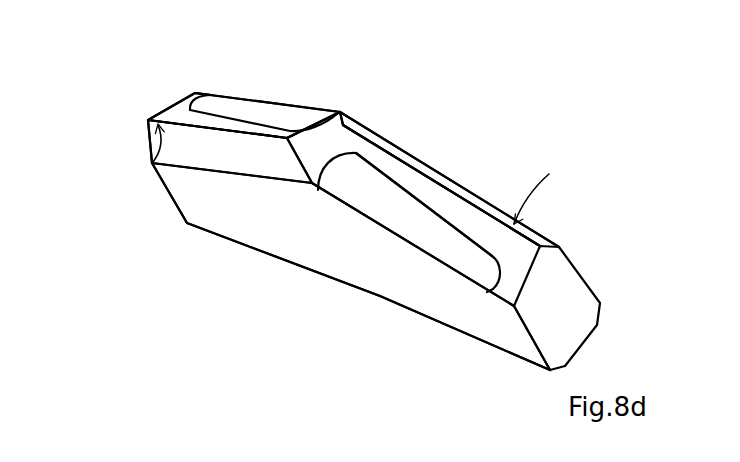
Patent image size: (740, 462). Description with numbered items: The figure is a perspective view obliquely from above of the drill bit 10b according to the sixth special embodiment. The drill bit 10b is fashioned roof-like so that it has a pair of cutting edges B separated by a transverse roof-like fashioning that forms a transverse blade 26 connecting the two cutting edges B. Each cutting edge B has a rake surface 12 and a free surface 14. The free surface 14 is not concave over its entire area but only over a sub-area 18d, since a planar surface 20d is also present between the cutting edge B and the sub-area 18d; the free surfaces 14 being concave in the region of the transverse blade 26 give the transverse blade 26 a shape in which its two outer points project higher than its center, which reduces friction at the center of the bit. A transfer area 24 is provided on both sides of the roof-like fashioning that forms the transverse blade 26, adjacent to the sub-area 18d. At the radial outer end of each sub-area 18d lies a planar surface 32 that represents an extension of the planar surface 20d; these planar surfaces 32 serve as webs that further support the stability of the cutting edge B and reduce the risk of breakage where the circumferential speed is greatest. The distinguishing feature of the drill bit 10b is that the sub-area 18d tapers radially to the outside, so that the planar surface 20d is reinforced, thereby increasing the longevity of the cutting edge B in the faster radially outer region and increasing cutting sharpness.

The drill bit 10b is at (590, 256).
The rake surface 12 is at (213, 153).
The free surface 14 is at (418, 225).
The sub-area 18d is at (289, 118).
The planar surface 20d is at (237, 124).
The transfer area 24 is at (338, 174).
The transverse blade 26 is at (321, 143).
The planar surface 32 is at (185, 116).
The cutting edge B is at (152, 162).